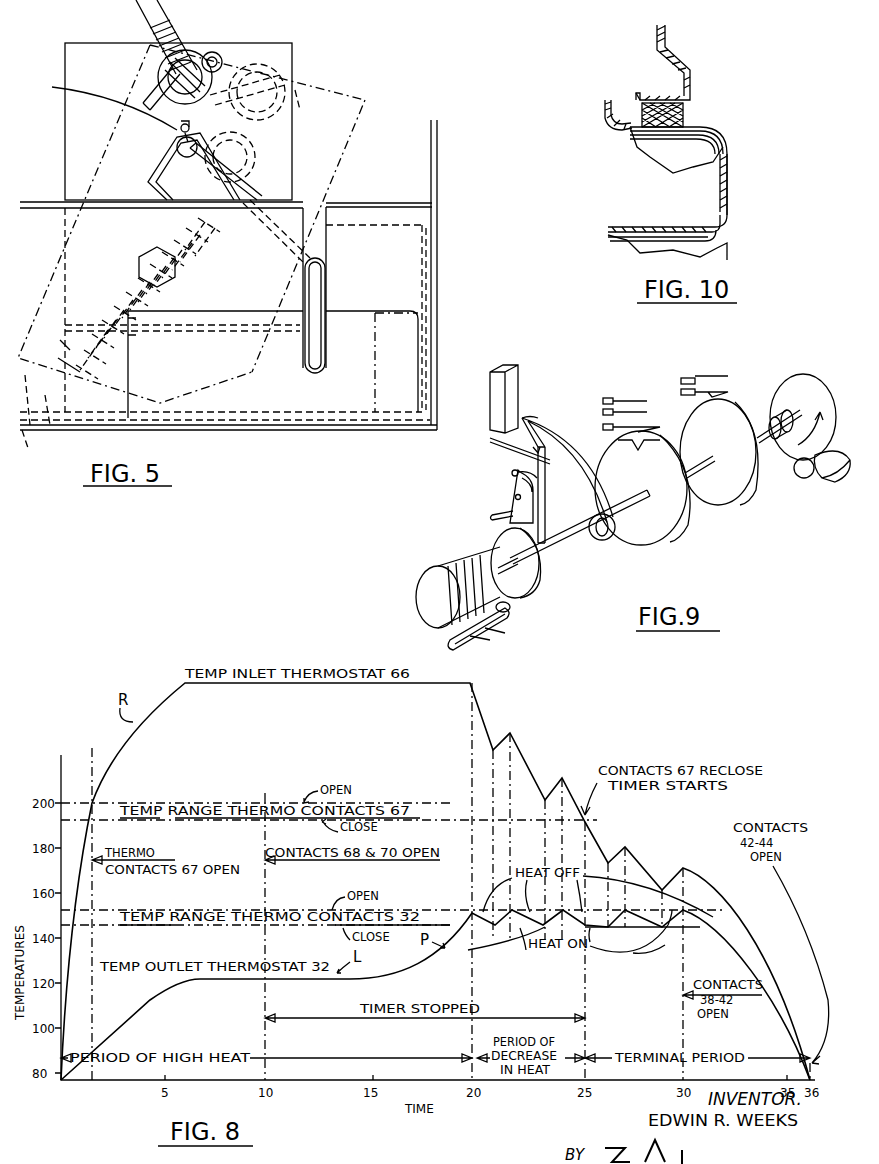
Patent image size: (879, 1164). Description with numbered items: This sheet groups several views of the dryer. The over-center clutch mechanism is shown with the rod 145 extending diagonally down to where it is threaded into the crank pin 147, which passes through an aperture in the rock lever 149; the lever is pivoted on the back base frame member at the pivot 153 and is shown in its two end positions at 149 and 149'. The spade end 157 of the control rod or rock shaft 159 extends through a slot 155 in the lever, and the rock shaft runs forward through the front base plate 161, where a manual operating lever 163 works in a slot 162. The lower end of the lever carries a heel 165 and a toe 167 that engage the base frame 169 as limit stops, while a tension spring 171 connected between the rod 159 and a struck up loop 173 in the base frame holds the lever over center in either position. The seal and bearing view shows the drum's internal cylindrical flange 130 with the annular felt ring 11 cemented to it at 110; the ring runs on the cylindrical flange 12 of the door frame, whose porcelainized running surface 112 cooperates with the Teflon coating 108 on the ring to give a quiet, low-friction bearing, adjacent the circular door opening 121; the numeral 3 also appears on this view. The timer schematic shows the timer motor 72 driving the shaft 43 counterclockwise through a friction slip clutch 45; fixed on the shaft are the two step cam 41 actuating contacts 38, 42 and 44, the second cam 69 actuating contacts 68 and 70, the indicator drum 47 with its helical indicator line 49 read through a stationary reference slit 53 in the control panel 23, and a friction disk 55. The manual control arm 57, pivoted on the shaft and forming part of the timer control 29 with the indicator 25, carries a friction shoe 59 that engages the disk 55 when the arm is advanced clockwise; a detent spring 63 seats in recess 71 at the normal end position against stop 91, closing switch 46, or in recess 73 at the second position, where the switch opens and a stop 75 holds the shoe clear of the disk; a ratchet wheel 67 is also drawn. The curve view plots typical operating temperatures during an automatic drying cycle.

In FIG. 5, the rod 145 is at (144, 14).
In FIG. 5, the crank pin 147 is at (198, 50).
In FIG. 5, the rock lever 149 is at (228, 226).
In FIG. 5, the rock lever (second limit position) 149' is at (213, 224).
In FIG. 5, the slot 155 is at (168, 133).
In FIG. 5, the spade end 157 is at (195, 132).
In FIG. 5, the control rod or rock shaft 159 is at (53, 87).
In FIG. 5, the pivot 153 is at (88, 194).
In FIG. 5, the tension spring 171 is at (153, 165).
In FIG. 5, the base frame 169 is at (56, 270).
In FIG. 5, the slot 162 is at (318, 213).
In FIG. 5, the manual operating lever 163 is at (327, 343).
In FIG. 5, the front base plate 161 is at (394, 400).
In FIG. 5, the toe 167 is at (272, 390).
In FIG. 5, the struck up loop 173 is at (46, 430).
In FIG. 5, the heel 165 is at (32, 450).
In FIG. 10, the panel flange 3 is at (667, 32).
In FIG. 10, the internal cylindrical flange 130 is at (670, 95).
In FIG. 10, the cemented joint 110 is at (636, 98).
In FIG. 10, the cylindrical flange 12 is at (605, 99).
In FIG. 10, the annular felt ring 11 is at (685, 112).
In FIG. 10, the Teflon surface coating 108 is at (723, 143).
In FIG. 10, the porcelainized running surface 112 is at (700, 160).
In FIG. 10, the circular door opening 121 is at (722, 243).
In FIG. 9, the switch 46 is at (515, 385).
In FIG. 9, the recess 73 is at (532, 420).
In FIG. 9, the recess 71 is at (549, 430).
In FIG. 9, the manual control arm 57 is at (544, 491).
In FIG. 9, the timer control 29 is at (608, 540).
In FIG. 9, the detent spring 63 is at (502, 446).
In FIG. 9, the stop 91 is at (511, 473).
In FIG. 9, the friction shoe 59 is at (512, 502).
In FIG. 9, the stop 75 is at (490, 516).
In FIG. 9, the indicator 25 is at (455, 562).
In FIG. 9, the indicator drum 47 is at (433, 583).
In FIG. 9, the friction disk 55 is at (523, 577).
In FIG. 9, the helical indicator line 49 is at (502, 574).
In FIG. 9, the shaft 43 is at (656, 487).
In FIG. 9, the friction slip clutch 45 is at (766, 440).
In FIG. 9, the stationary reference slit 53 is at (511, 610).
In FIG. 9, the control panel 23 is at (497, 630).
In FIG. 9, the two step cam 41 is at (667, 523).
In FIG. 9, the contact 38 is at (608, 398).
In FIG. 9, the contact 42 is at (603, 412).
In FIG. 9, the contact 44 is at (603, 427).
In FIG. 9, the contact 68 is at (688, 378).
In FIG. 9, the contact 70 is at (692, 395).
In FIG. 9, the second cam 69 is at (738, 485).
In FIG. 9, the ratchet wheel 67 is at (803, 417).
In FIG. 9, the timer motor 72 is at (832, 481).